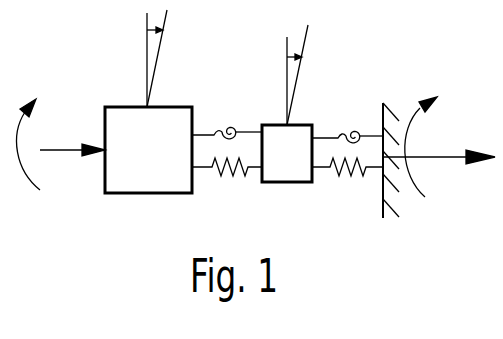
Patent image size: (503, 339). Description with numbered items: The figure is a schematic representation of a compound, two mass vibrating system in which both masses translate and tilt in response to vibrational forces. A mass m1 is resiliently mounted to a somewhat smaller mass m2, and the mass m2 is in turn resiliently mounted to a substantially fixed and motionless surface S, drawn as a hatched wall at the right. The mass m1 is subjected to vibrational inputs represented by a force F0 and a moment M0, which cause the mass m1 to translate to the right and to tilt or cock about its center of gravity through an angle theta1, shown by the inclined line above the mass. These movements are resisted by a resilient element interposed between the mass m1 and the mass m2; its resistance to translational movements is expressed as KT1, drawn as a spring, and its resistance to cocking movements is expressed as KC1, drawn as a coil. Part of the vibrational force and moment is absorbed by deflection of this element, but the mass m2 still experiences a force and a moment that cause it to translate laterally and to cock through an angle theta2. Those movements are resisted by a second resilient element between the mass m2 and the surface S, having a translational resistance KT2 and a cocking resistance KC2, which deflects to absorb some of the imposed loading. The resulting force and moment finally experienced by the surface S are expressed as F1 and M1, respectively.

The mass m1 is at (148, 150).
The mass m2 is at (287, 155).
The angle theta1 is at (139, 58).
The angle theta2 is at (281, 75).
The moment M0 is at (45, 133).
The force F0 is at (72, 142).
The resistance to cocking movements KC1 is at (227, 116).
The resistance to translational movements KT1 is at (227, 186).
The resistance to cocking movements KC2 is at (347, 120).
The resistance to translational movement KT2 is at (347, 188).
The surface S is at (380, 103).
The force F1 is at (439, 145).
The moment M1 is at (437, 143).